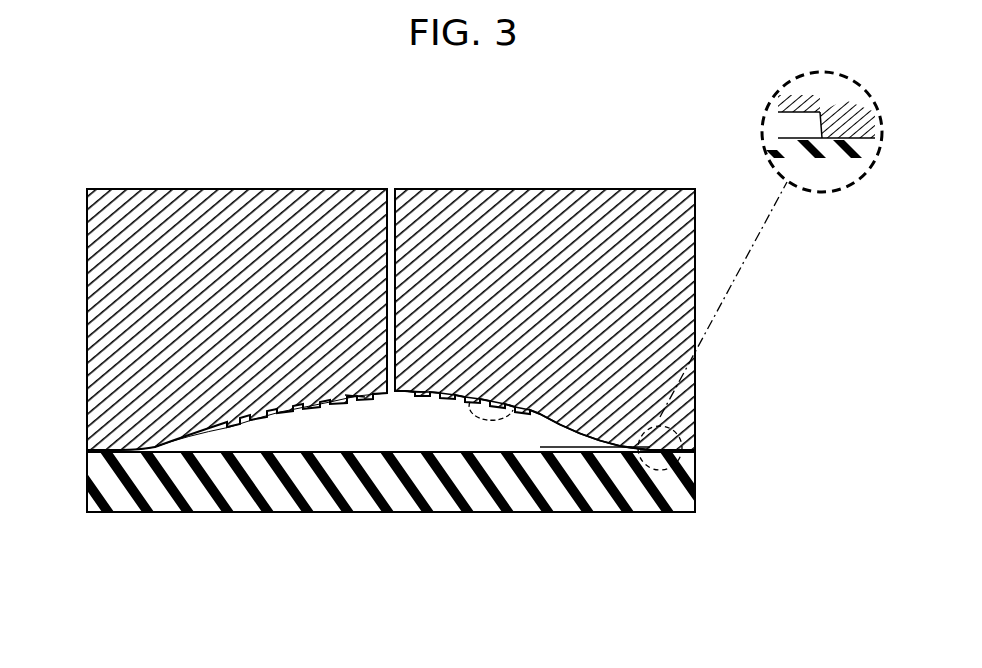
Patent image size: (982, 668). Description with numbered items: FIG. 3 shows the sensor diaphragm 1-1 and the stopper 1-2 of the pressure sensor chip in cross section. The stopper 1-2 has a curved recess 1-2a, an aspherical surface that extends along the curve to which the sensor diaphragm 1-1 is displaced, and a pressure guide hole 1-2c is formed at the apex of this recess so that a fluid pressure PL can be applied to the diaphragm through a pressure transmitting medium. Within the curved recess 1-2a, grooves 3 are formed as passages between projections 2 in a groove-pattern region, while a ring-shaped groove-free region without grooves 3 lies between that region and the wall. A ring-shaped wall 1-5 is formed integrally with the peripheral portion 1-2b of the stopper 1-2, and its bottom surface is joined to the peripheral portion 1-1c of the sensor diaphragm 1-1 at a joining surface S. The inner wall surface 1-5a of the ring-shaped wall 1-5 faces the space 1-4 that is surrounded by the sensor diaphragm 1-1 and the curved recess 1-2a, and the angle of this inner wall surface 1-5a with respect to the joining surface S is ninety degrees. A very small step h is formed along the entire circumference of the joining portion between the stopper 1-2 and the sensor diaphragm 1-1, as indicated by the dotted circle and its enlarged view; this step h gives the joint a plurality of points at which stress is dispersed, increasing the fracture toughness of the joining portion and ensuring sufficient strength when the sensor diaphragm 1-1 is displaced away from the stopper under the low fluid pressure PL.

The sensor diaphragm 1-1 is at (103, 479).
The peripheral portion of the sensor diaphragm 1-1c is at (687, 503).
The stopper 1-2 is at (105, 316).
The curved recess 1-2a is at (527, 403).
The peripheral portion of the stopper 1-2b is at (695, 411).
The pressure guide hole 1-2c is at (387, 272).
The space 1-4 is at (300, 430).
The ring-shaped wall 1-5 is at (695, 443).
The inner wall surface 1-5a is at (650, 452).
The projections 2 is at (355, 397).
The grooves 3 is at (413, 393).
The joining surface S is at (837, 142).
The step h is at (555, 457).
The fluid pressure PL is at (393, 180).